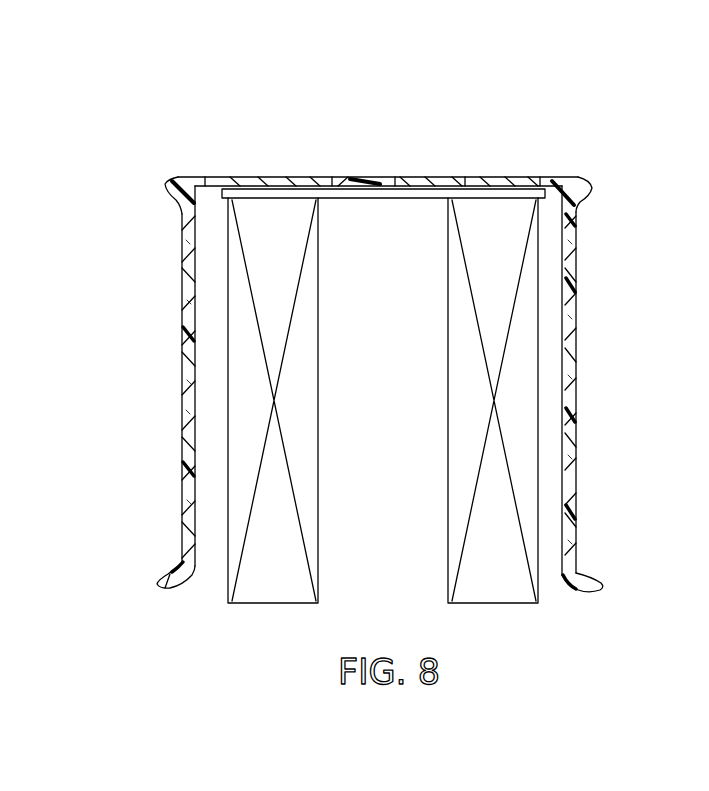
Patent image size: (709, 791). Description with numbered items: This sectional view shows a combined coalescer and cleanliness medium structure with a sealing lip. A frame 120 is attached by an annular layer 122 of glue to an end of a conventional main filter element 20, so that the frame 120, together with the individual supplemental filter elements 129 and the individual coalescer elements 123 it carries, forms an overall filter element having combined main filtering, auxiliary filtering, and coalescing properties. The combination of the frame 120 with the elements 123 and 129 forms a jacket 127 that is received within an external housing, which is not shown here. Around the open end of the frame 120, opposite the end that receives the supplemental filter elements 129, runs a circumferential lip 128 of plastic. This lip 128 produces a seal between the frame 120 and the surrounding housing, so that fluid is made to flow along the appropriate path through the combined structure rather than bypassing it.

The frame 120 is at (576, 354).
The annular layer of glue 122 is at (302, 192).
The coalescer elements 123 is at (184, 387).
The jacket 127 is at (590, 451).
The circumferential lip 128 is at (593, 574).
The supplemental filter elements 129 is at (492, 176).
The main filter element 20 is at (258, 604).